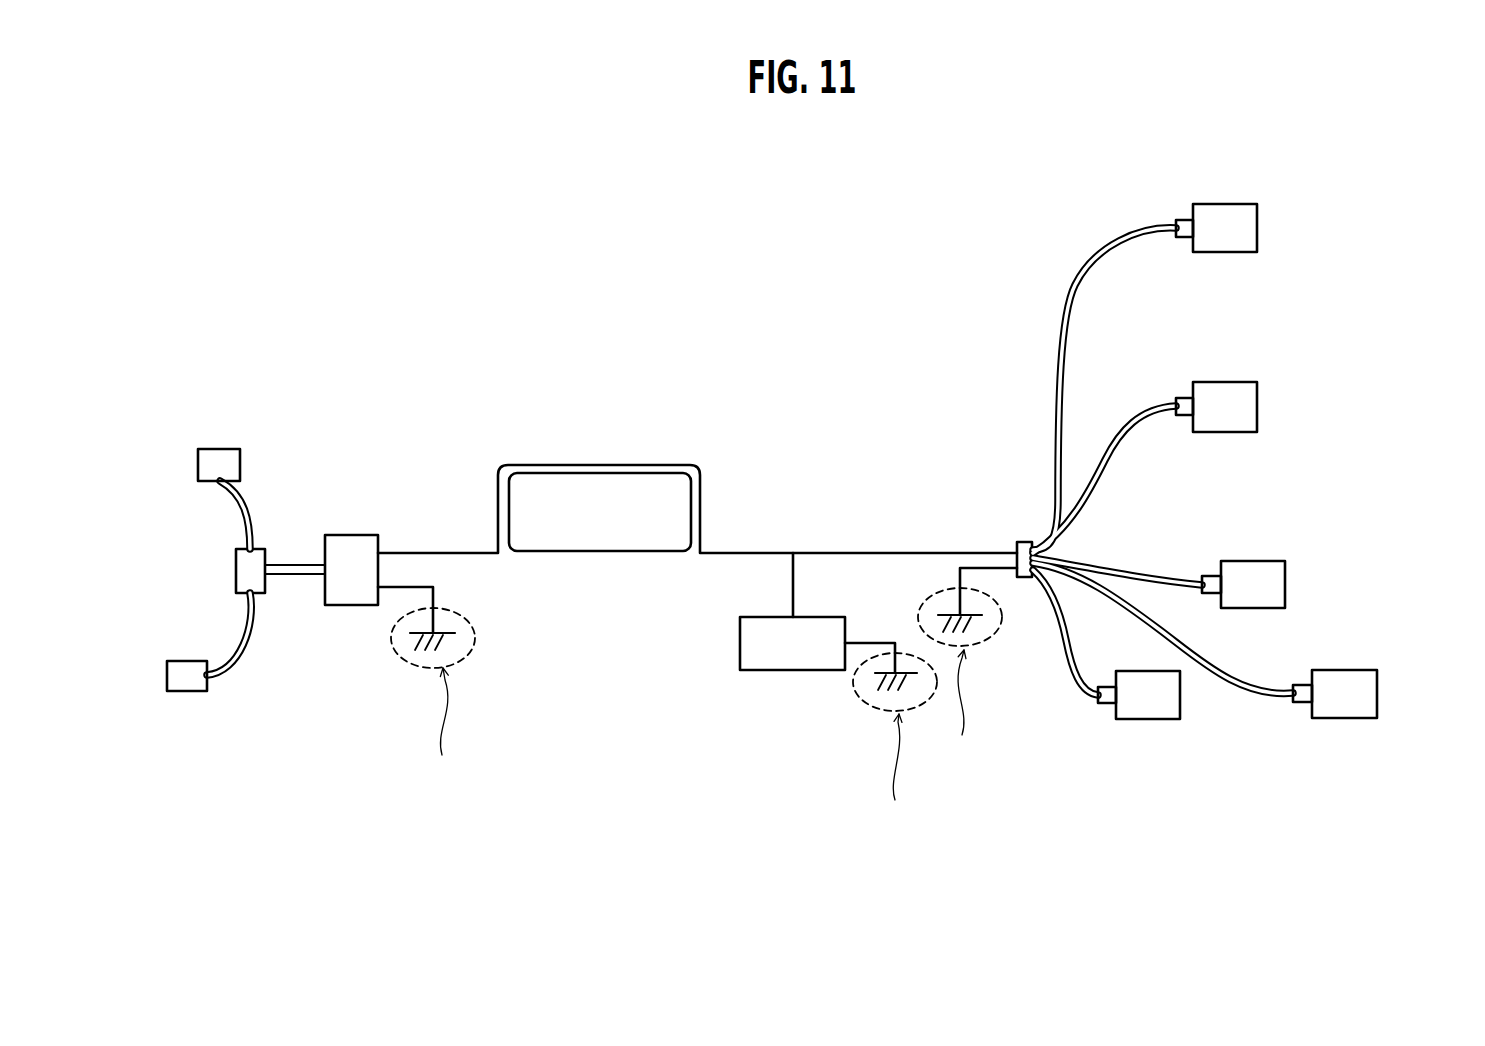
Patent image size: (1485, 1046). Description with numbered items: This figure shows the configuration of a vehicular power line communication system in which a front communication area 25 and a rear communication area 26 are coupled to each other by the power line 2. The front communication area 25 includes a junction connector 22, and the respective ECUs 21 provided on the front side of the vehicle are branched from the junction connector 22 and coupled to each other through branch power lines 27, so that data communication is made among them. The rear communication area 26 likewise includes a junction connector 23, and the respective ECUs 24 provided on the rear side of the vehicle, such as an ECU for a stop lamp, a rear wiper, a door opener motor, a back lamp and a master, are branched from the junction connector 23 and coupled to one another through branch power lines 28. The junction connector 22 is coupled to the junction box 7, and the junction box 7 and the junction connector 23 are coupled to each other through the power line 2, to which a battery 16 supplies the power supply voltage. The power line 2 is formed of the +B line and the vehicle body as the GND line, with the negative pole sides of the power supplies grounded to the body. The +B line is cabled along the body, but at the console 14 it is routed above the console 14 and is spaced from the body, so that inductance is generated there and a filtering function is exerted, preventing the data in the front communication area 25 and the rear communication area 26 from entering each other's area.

The power line 2 is at (830, 550).
The junction box 7 is at (355, 535).
The console 14 is at (602, 538).
The battery 16 is at (770, 672).
The ECU 21 is at (215, 449).
The junction connector 22 is at (268, 553).
The junction connector 23 is at (1020, 540).
The ECU 24 is at (1245, 228).
The front communication area 25 is at (276, 380).
The rear communication area 26 is at (1117, 766).
The branch power lines 27 is at (251, 517).
The branch power lines 28 is at (1072, 298).